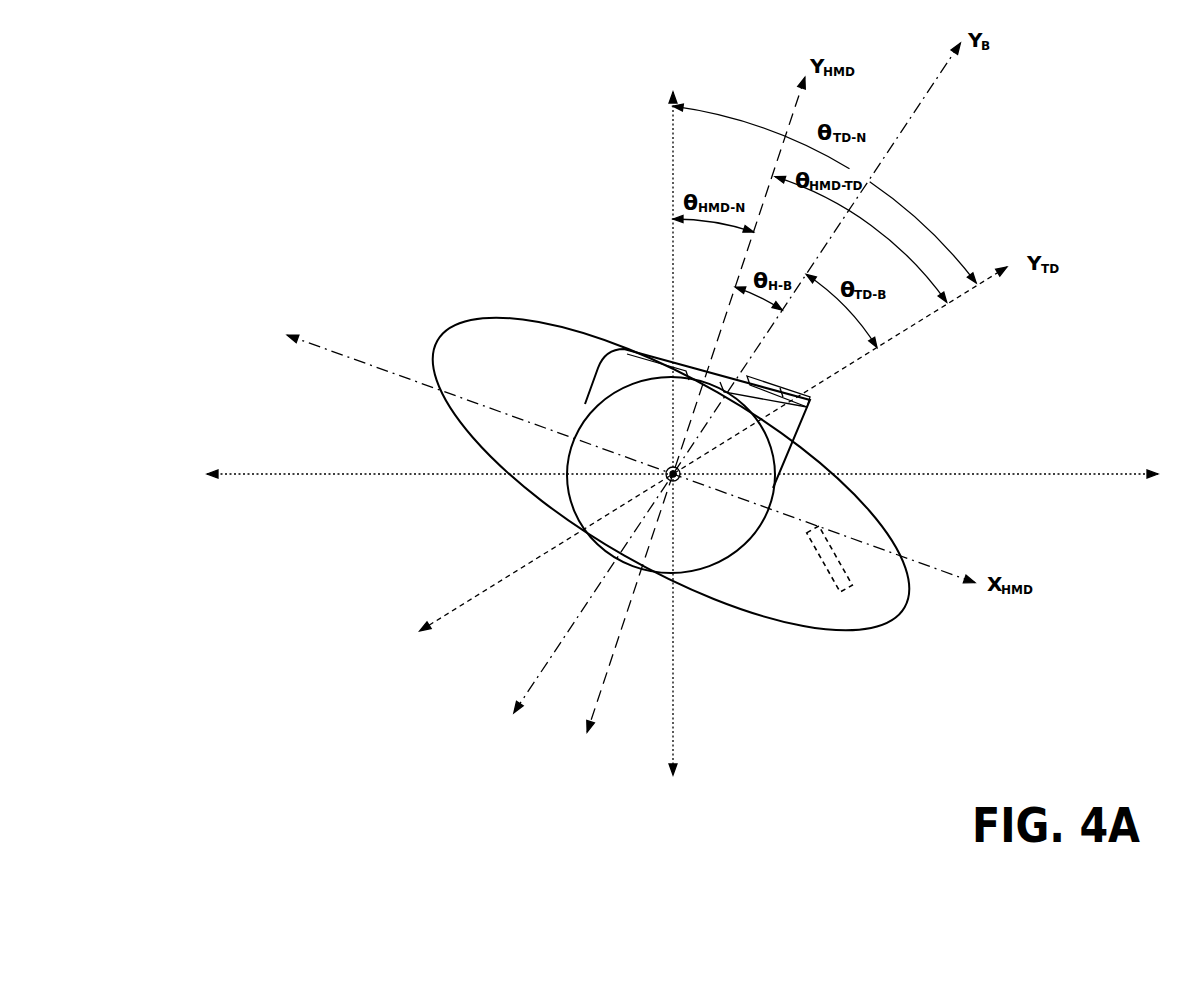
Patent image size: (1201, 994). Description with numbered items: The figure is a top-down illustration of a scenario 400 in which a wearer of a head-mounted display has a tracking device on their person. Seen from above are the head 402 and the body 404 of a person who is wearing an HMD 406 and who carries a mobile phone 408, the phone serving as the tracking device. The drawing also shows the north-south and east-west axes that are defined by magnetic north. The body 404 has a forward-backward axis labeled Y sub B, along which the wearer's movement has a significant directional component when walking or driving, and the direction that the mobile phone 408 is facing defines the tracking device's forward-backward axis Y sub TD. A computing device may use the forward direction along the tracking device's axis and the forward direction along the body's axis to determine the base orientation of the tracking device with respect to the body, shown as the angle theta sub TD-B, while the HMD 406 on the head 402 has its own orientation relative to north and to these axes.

The scenario 400 is at (348, 162).
The head 402 is at (602, 497).
The body 404 is at (481, 344).
The HMD 406 is at (808, 429).
The mobile phone 408 is at (834, 547).